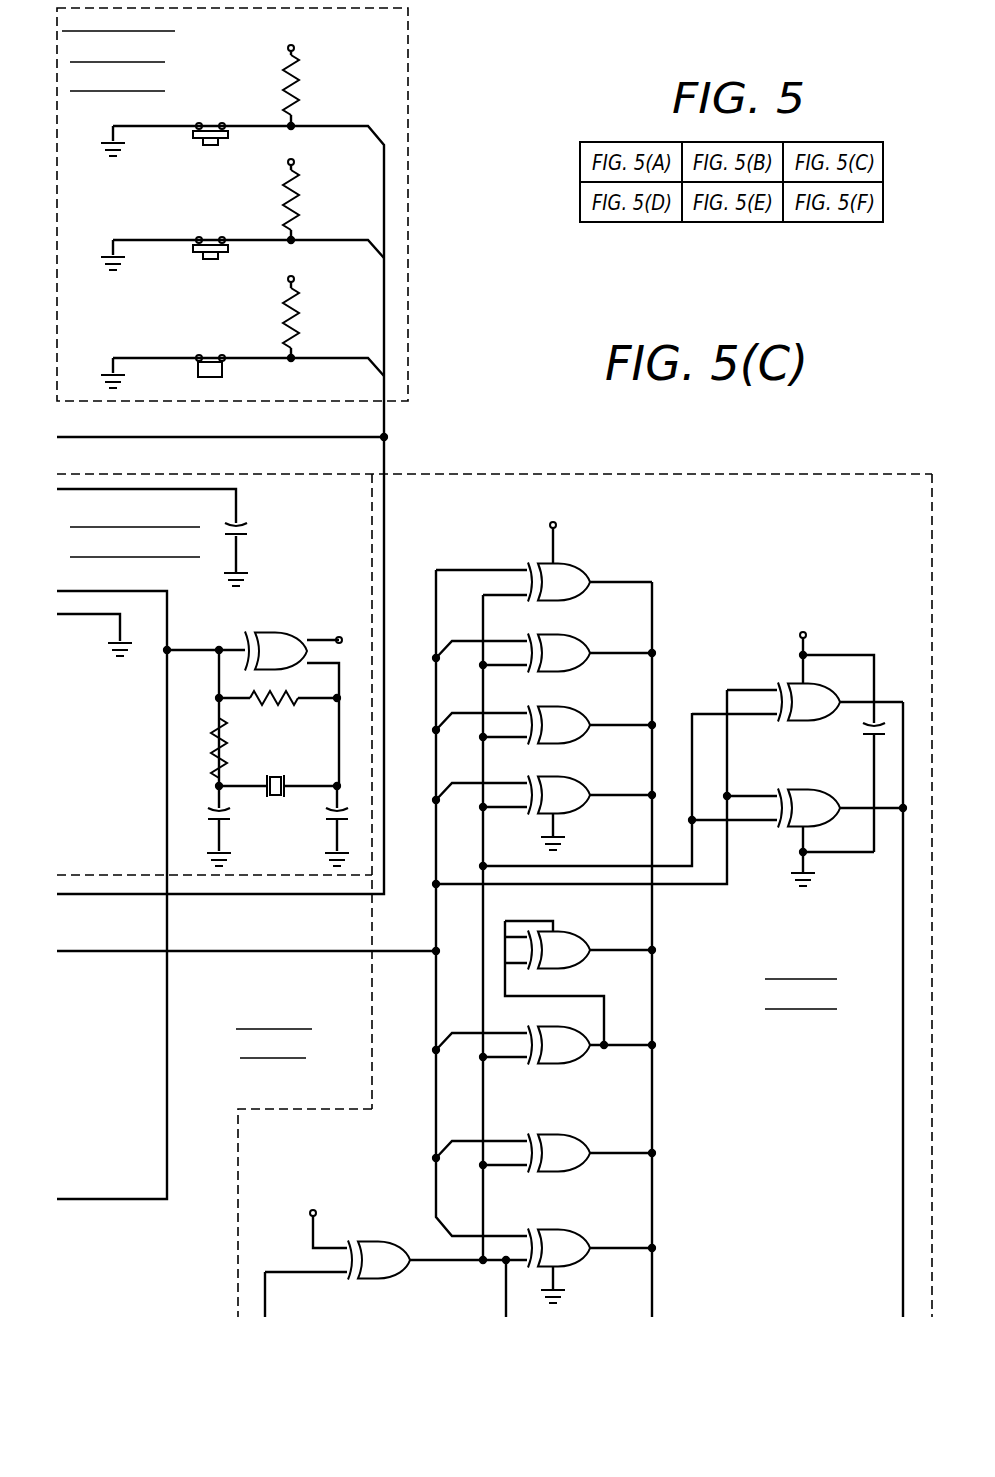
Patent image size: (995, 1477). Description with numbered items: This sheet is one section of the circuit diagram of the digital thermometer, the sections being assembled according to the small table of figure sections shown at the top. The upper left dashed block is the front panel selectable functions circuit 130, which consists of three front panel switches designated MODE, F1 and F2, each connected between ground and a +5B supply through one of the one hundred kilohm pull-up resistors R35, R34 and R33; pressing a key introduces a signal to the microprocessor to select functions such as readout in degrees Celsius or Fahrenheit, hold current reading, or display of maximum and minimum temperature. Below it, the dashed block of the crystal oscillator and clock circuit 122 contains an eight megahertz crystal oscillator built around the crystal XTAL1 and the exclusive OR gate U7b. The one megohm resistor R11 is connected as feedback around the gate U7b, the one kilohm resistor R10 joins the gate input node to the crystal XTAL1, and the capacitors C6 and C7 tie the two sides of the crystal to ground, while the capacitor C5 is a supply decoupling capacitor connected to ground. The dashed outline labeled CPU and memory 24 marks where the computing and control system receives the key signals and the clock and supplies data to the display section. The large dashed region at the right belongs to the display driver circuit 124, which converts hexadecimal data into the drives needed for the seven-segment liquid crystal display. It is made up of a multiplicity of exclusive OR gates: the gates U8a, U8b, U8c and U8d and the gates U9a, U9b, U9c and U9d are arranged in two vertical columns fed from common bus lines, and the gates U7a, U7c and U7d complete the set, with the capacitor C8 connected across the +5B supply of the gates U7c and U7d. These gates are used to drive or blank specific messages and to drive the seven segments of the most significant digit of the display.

The front panel selectable functions circuit 130 is at (232, 204).
The crystal oscillator and clock circuit 122 is at (494, 791).
The CPU 24 is at (304, 1161).
The display driver circuit 124 is at (848, 895).
The resistor R35 is at (298, 80).
The resistor R34 is at (298, 195).
The resistor R33 is at (298, 312).
The front panel switch MODE is at (198, 149).
The front panel switch F1 is at (198, 263).
The front panel switch F2 is at (223, 371).
The capacitor C5 is at (250, 537).
The exclusive OR gate U7b is at (275, 633).
The resistor R10 is at (216, 732).
The resistor R11 is at (293, 702).
The capacitor C6 is at (213, 822).
The capacitor C7 is at (347, 823).
The crystal XTAL1 is at (277, 800).
The exclusive OR gate U8a is at (578, 563).
The exclusive OR gate U8b is at (578, 634).
The exclusive OR gate U8c is at (578, 706).
The exclusive OR gate U8d is at (578, 776).
The exclusive OR gate U9a is at (577, 931).
The exclusive OR gate U9b is at (548, 1064).
The exclusive OR gate U9c is at (577, 1134).
The exclusive OR gate U9d is at (577, 1230).
The exclusive OR gate U7a is at (377, 1242).
The exclusive OR gate U7c is at (822, 790).
The exclusive OR gate U7d is at (797, 721).
The capacitor C8 is at (881, 728).